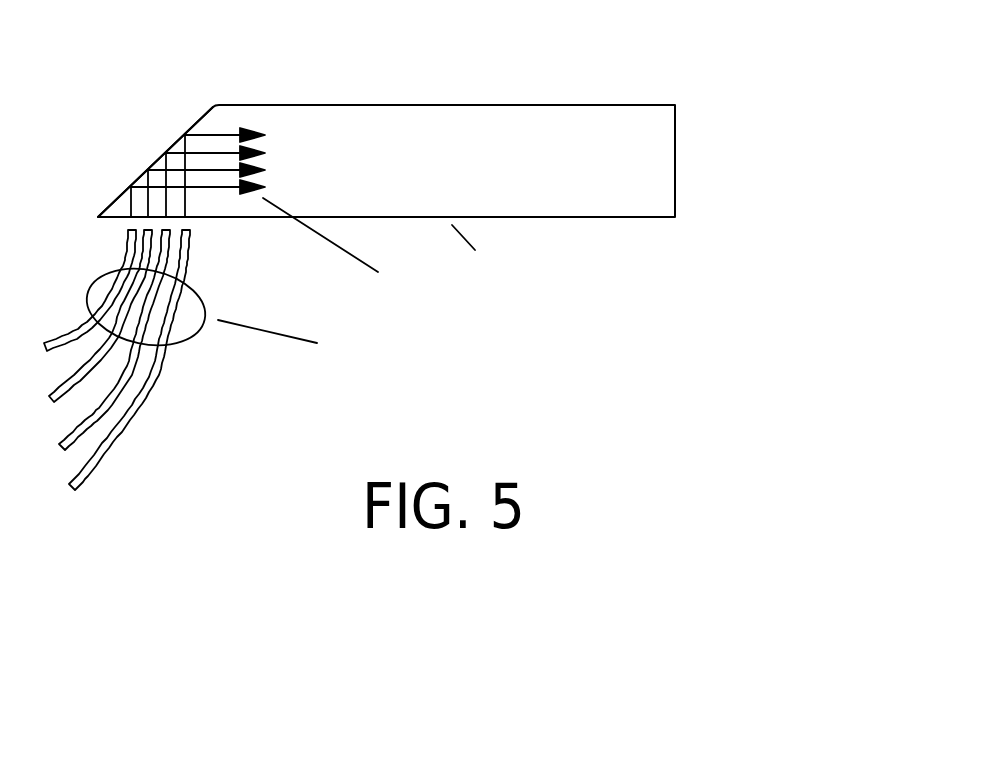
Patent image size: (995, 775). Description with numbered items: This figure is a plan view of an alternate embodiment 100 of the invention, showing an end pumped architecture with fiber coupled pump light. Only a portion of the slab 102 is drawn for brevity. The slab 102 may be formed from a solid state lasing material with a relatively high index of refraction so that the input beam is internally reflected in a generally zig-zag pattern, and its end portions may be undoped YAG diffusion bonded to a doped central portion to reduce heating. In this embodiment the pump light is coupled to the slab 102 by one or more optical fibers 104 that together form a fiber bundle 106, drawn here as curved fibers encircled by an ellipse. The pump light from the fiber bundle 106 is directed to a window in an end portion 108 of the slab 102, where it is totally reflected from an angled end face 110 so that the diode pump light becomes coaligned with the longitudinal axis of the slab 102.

The alternate embodiment 100 is at (769, 99).
The slab 102 is at (675, 190).
The optical fibers 104 is at (192, 254).
The fiber bundle 106 is at (198, 337).
The end portion 108 is at (100, 238).
The end face 110 is at (185, 135).